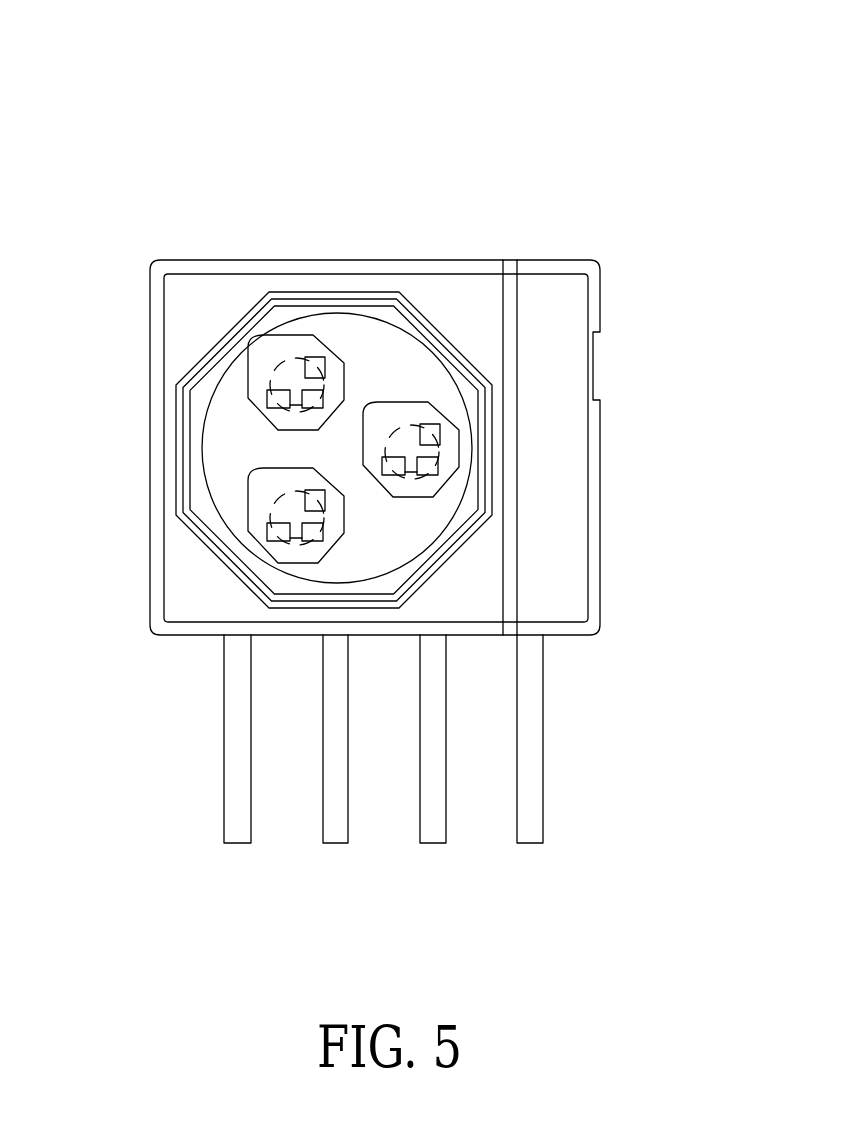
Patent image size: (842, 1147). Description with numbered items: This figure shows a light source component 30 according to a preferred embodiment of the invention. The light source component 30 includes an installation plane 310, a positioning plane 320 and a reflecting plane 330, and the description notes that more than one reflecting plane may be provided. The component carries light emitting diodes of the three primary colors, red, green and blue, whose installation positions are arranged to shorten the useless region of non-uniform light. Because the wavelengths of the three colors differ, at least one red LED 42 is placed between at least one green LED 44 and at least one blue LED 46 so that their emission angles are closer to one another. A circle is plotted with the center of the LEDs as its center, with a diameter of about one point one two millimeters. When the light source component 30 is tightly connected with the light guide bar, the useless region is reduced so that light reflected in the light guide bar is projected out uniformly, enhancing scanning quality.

The light source component 30 is at (566, 178).
The installation plane 310 is at (396, 576).
The positioning plane 320 is at (230, 397).
The reflecting plane 330 is at (273, 420).
The red LED 42 is at (440, 457).
The green LED 44 is at (433, 423).
The blue LED 46 is at (395, 463).